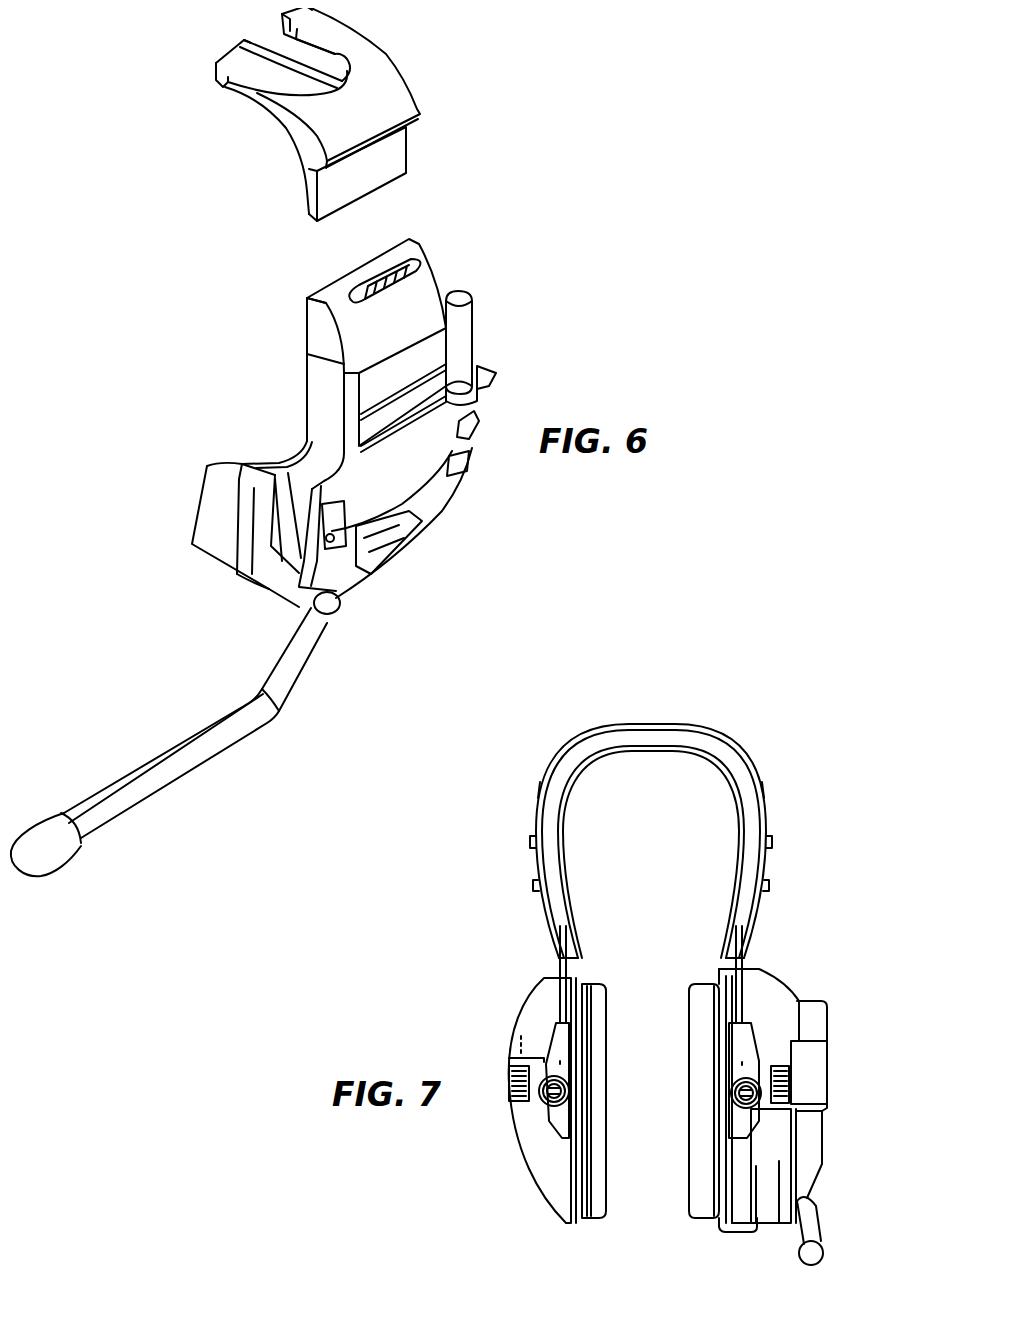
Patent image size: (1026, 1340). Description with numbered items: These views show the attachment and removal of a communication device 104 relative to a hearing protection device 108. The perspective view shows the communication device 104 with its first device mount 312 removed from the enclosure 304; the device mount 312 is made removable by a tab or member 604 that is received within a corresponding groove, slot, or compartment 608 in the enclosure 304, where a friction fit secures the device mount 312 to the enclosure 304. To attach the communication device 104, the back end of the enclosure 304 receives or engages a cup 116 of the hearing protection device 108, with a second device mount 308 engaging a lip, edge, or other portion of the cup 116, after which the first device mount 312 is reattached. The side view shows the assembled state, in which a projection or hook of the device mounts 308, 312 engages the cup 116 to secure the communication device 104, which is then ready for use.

In FIG. 6, the communication device 104 is at (543, 294).
In FIG. 7, the communication device 104 is at (868, 1074).
In FIG. 7, the hearing protection device 108 is at (498, 873).
In FIG. 7, the cup 116 is at (508, 1043).
In FIG. 6, the enclosure 304 is at (297, 440).
In FIG. 7, the enclosure 304 is at (832, 1094).
In FIG. 7, the second device mount 308 is at (740, 1232).
In FIG. 6, the first device mount 312 is at (229, 40).
In FIG. 7, the first device mount 312 is at (778, 976).
In FIG. 6, the tab or member 604 is at (408, 147).
In FIG. 6, the groove, slot, or compartment 608 is at (348, 280).